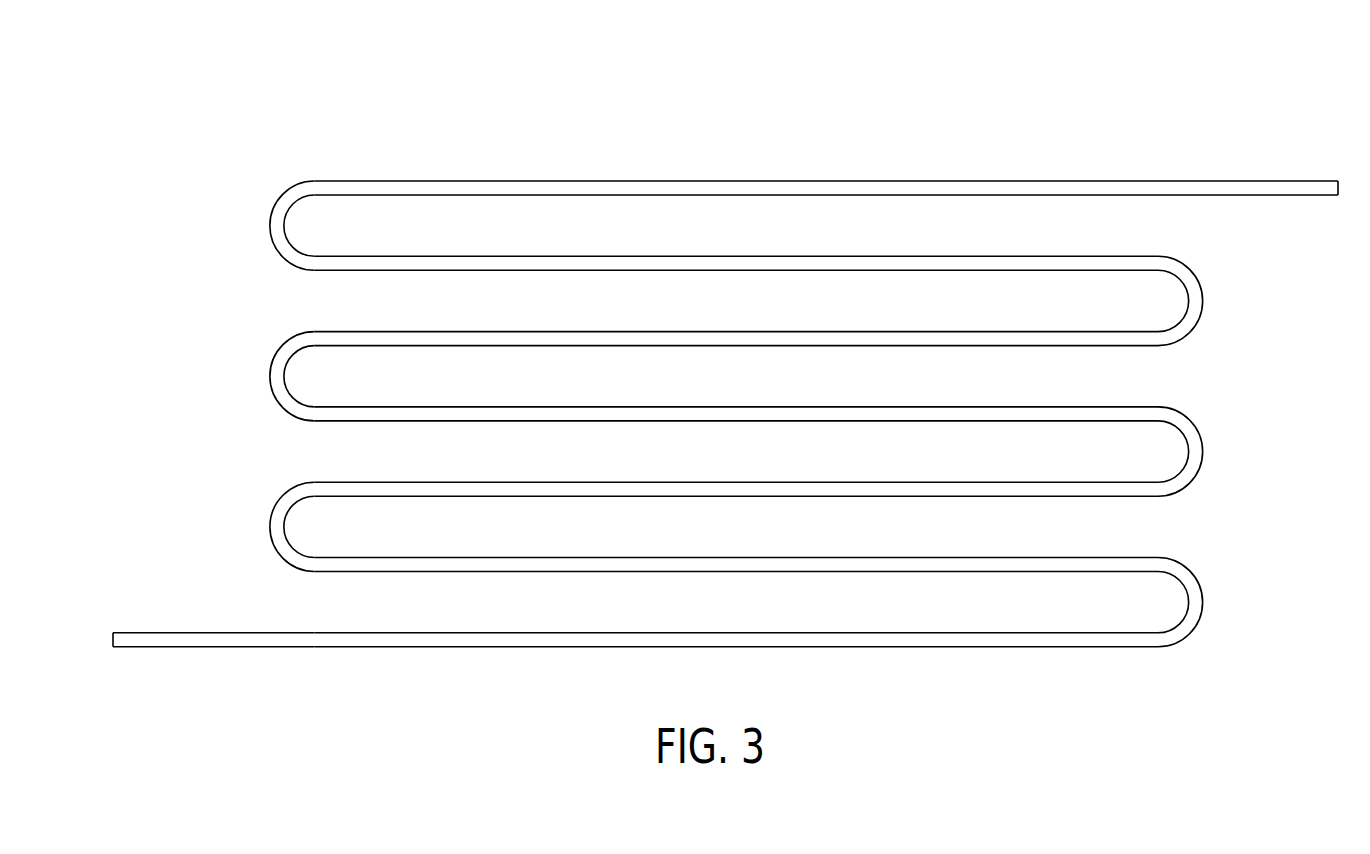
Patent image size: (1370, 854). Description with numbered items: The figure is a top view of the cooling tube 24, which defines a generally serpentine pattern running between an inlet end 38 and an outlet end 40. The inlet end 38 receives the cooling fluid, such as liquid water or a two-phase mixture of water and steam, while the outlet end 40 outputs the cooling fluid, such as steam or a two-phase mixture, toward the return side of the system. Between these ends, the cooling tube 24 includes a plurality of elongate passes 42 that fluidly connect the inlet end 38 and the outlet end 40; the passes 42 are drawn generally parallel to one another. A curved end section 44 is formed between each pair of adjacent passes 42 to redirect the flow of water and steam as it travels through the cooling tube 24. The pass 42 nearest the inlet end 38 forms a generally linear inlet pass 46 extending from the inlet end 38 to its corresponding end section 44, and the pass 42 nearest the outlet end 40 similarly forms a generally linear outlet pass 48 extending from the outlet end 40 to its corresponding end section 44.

The cooling tube 24 is at (205, 85).
The inlet end 38 is at (113, 640).
The outlet end 40 is at (1340, 188).
The elongate passes 42 is at (897, 408).
The curved end section 44 is at (270, 227).
The inlet pass 46 is at (232, 640).
The outlet pass 48 is at (1203, 196).